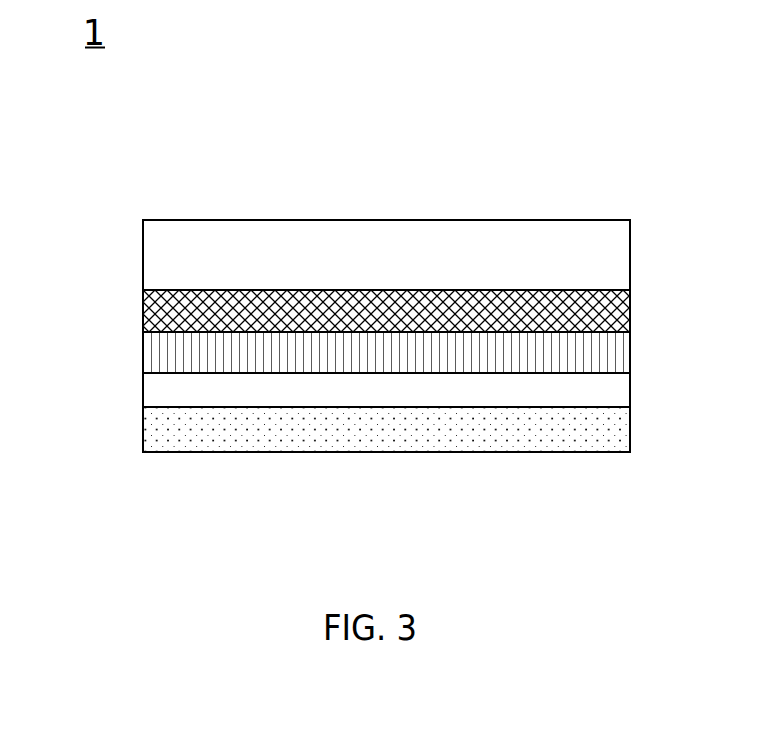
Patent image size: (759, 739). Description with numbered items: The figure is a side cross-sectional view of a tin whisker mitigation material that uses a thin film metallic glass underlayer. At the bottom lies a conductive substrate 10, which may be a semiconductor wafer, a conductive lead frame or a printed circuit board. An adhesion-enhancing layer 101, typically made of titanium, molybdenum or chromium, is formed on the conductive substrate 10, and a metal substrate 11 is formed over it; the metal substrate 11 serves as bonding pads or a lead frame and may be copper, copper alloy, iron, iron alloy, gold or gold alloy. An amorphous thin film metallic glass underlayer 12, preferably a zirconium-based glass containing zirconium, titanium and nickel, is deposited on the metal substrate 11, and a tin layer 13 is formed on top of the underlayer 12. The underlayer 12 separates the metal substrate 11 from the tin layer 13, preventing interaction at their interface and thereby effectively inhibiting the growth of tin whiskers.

The conductive substrate 10 is at (630, 437).
The adhesion-enhancing layer 101 is at (630, 393).
The metal substrate 11 is at (630, 348).
The underlayer 12 is at (150, 305).
The tin layer 13 is at (150, 240).